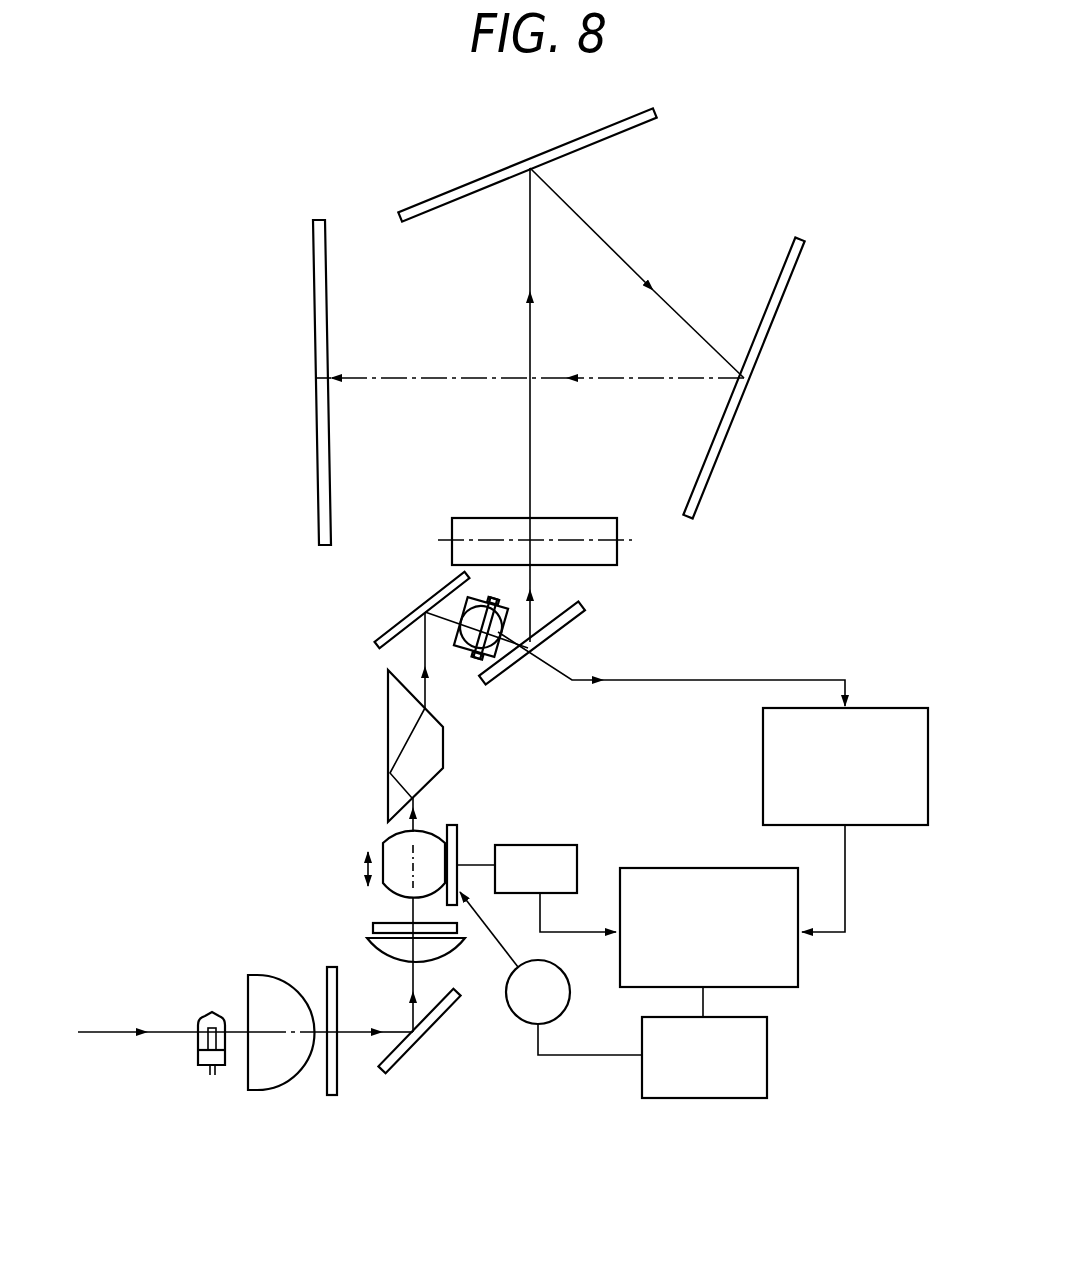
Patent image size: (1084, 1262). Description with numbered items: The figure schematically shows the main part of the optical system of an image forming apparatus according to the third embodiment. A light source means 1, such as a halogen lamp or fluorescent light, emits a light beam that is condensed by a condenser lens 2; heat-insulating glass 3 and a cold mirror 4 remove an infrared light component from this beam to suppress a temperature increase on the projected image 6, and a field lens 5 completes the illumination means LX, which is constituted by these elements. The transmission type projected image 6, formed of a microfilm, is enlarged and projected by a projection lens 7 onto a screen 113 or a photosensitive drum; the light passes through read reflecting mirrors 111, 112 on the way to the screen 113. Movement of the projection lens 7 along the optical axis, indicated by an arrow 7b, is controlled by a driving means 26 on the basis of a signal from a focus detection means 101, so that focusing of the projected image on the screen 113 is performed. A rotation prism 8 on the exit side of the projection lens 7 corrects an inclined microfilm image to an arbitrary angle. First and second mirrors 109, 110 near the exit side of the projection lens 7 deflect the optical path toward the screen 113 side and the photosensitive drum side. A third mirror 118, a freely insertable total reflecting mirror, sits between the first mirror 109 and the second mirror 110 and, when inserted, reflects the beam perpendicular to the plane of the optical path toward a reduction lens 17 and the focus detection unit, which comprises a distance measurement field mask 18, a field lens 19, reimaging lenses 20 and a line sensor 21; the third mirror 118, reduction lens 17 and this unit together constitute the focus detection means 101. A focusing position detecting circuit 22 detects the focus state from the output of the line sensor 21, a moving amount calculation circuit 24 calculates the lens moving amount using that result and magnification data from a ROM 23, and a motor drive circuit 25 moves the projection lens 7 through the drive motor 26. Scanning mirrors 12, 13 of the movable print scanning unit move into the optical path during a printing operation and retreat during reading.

The light source means 1 is at (208, 1017).
The condenser lens 2 is at (255, 975).
The heat-insulating glass 3 is at (323, 967).
The cold mirror 4 is at (405, 1058).
The field lens 5 is at (368, 937).
The projected image 6 is at (370, 925).
The projection lens 7 is at (383, 840).
The arrow 7b is at (363, 865).
The rotation prism 8 is at (388, 735).
The scanning mirror 12 is at (583, 543).
The scanning mirror 13 is at (617, 540).
The reduction lens 17 is at (556, 665).
The distance measurement field mask 18 is at (556, 665).
The field lens 19 is at (556, 665).
The reimaging lenses 20 is at (556, 665).
The line sensor 21 is at (452, 590).
The focusing position detecting circuit 22 is at (895, 705).
The ROM 23 is at (543, 845).
The moving amount calculation circuit 24 is at (755, 867).
The motor drive circuit 25 is at (767, 1035).
The drive motor 26 is at (568, 985).
The focus detection means 101 is at (710, 750).
The first mirror 109 is at (390, 633).
The second mirror 110 is at (590, 602).
The read reflecting mirror 111 is at (612, 127).
The read reflecting mirror 112 is at (797, 274).
The screen 113 is at (313, 265).
The third mirror 118 is at (500, 652).
The illumination means LX is at (242, 973).